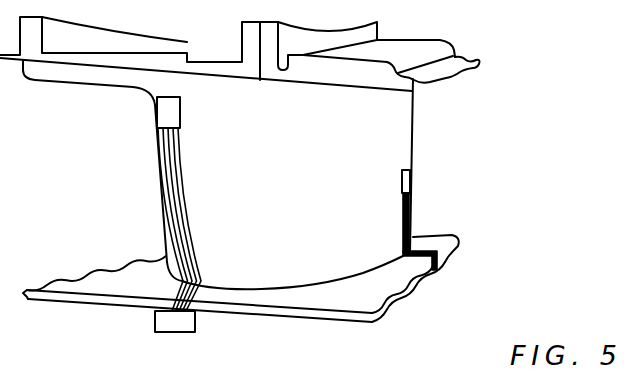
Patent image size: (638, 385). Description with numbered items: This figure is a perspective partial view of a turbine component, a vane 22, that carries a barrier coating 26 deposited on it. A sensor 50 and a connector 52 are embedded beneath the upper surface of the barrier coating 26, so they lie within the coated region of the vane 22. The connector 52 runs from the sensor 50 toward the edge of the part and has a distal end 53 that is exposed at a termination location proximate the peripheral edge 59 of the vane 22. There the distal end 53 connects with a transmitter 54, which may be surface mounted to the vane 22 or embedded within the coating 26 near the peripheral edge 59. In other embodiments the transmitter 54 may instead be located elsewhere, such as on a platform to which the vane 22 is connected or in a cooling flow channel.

The vane 22 is at (117, 293).
The barrier coating 26 is at (313, 133).
The sensor 50 is at (167, 115).
The connector 52 is at (183, 198).
The distal end 53 is at (165, 288).
The transmitter 54 is at (177, 320).
The peripheral edge 59 is at (265, 320).